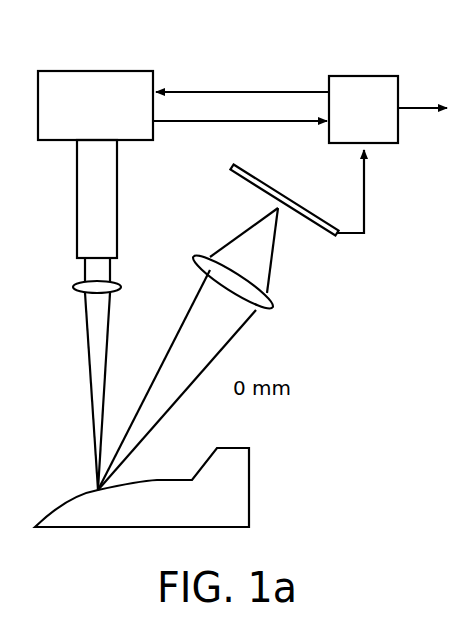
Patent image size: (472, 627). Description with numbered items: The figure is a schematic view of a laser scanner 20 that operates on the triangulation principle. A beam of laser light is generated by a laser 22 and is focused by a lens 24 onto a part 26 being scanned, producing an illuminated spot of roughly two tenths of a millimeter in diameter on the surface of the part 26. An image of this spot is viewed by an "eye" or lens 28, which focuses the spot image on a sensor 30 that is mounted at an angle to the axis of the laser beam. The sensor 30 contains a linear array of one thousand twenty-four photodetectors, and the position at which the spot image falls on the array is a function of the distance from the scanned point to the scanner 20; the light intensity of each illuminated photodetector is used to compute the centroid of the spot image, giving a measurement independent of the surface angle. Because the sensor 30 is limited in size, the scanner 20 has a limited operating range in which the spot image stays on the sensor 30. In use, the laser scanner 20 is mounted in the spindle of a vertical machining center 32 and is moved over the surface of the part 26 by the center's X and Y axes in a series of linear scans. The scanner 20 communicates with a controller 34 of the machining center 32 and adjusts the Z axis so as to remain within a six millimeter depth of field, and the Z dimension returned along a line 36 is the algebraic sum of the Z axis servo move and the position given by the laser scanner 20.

The laser scanner 20 is at (337, 377).
The laser 22 is at (118, 200).
The lens 24 is at (73, 288).
The part 26 is at (249, 483).
The lens 28 is at (273, 307).
The sensor 30 is at (273, 187).
The vertical machining center 32 is at (93, 71).
The controller 34 is at (363, 76).
The line 36 is at (416, 108).